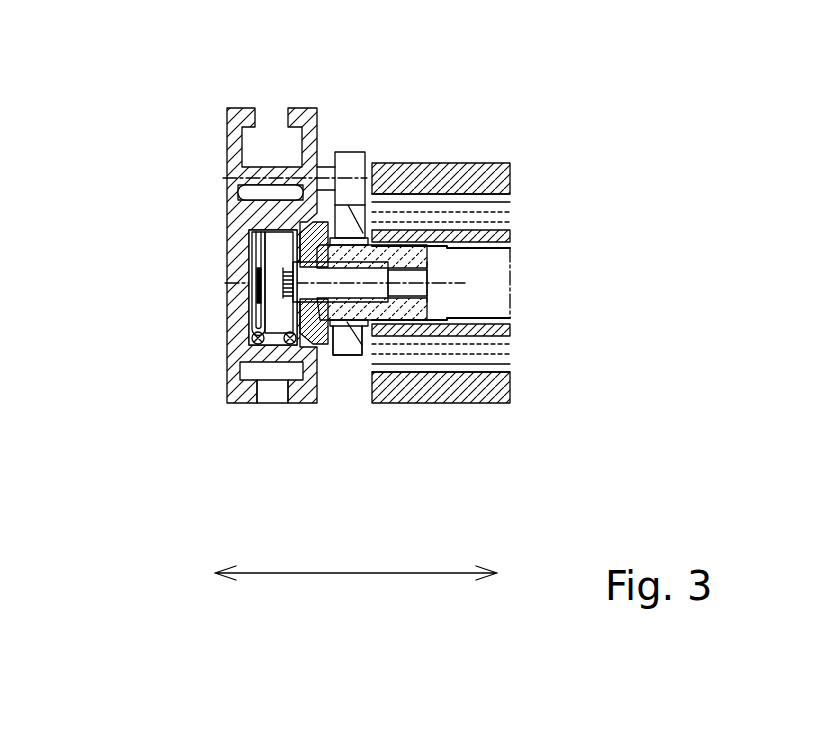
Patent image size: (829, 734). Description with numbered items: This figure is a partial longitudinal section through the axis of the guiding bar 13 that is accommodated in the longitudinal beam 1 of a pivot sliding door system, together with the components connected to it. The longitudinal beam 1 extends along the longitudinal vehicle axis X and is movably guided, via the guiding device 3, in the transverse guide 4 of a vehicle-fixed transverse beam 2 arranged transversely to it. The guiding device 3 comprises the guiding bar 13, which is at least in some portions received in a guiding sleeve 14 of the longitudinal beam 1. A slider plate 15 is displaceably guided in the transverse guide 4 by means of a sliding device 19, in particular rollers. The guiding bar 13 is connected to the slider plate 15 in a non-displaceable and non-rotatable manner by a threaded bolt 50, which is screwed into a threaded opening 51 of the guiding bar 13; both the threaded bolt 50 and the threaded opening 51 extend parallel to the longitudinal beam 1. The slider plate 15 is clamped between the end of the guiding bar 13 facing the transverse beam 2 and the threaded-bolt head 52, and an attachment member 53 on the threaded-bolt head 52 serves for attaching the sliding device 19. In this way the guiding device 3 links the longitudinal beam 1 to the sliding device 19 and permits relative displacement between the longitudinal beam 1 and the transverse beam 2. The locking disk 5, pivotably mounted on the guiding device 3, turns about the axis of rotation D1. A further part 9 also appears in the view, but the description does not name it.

The longitudinal beam 1 is at (450, 385).
The transverse beam 2 is at (262, 210).
The guiding device 3 is at (375, 138).
The transverse guide 4 is at (293, 293).
The locking disk 5 is at (343, 345).
The fastening element 9 is at (325, 172).
The guiding bar 13 is at (433, 237).
The guiding sleeve 14 is at (438, 266).
The slider plate 15 is at (305, 385).
The sliding device 19 is at (273, 248).
The threaded bolt 50 is at (255, 342).
The threaded opening 51 is at (373, 332).
The threaded-bolt head 52 is at (277, 270).
The attachment member 53 is at (253, 305).
The axis of rotation D1 is at (445, 283).
The longitudinal vehicle axis X is at (356, 601).